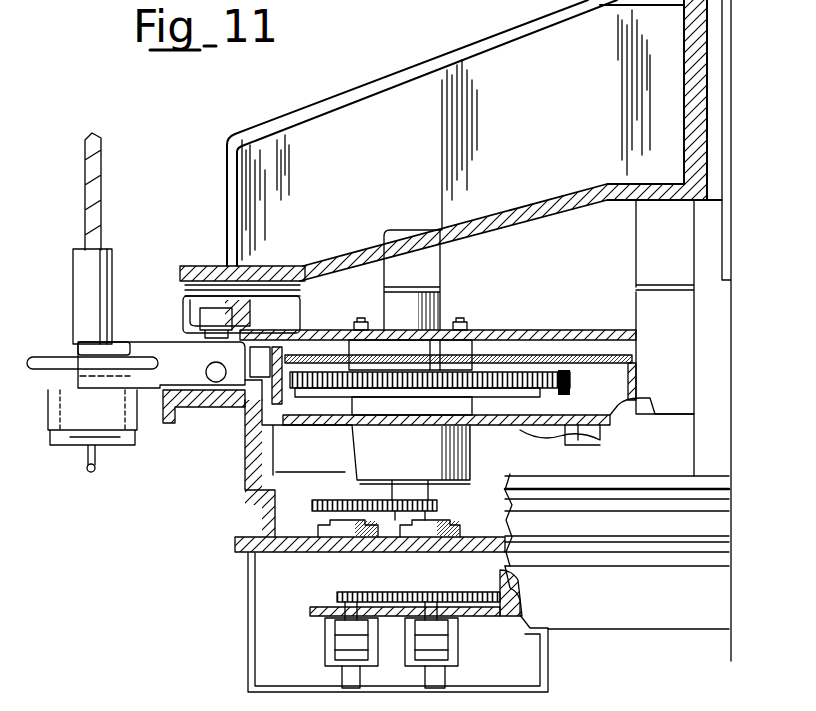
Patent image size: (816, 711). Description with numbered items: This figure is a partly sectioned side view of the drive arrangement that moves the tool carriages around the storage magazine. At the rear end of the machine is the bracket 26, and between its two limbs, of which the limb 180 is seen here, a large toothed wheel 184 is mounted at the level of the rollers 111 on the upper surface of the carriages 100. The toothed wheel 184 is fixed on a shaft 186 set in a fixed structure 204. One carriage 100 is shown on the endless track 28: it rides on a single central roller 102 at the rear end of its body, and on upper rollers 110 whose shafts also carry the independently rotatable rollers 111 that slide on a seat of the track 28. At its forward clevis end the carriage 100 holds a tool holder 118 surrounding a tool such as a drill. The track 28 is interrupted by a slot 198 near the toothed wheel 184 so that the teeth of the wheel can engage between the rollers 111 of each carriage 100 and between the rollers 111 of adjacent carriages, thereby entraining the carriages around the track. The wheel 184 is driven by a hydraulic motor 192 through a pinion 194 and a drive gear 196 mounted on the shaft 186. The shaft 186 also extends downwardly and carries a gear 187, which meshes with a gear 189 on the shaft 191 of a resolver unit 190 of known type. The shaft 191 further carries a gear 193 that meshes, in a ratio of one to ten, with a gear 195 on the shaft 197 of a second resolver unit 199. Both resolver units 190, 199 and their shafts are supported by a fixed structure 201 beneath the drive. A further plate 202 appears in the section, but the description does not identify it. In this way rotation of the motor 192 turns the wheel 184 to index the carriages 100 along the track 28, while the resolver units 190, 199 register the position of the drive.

The bracket 26 is at (438, 52).
The endless track 28 is at (211, 414).
The carriage 100 is at (139, 334).
The central roller 102 is at (243, 378).
The upper roller 110 is at (213, 314).
The roller 111 is at (192, 336).
The tool holder 118 is at (68, 298).
The limb 180 is at (342, 101).
The toothed wheel 184 is at (555, 330).
The shaft 186 is at (428, 306).
The gear 187 is at (438, 506).
The gear 189 is at (326, 492).
The resolver unit 190 is at (336, 646).
The shaft 191 is at (290, 522).
The hydraulic motor 192 is at (597, 404).
The gear 193 is at (338, 598).
The pinion 194 is at (567, 381).
The gear 195 is at (521, 600).
The drive gear 196 is at (495, 332).
The shaft 197 is at (452, 588).
The slot 198 is at (238, 332).
The resolver unit 199 is at (440, 647).
The fixed structure 201 is at (320, 612).
The plate 202 is at (591, 442).
The fixed structure 204 is at (583, 351).